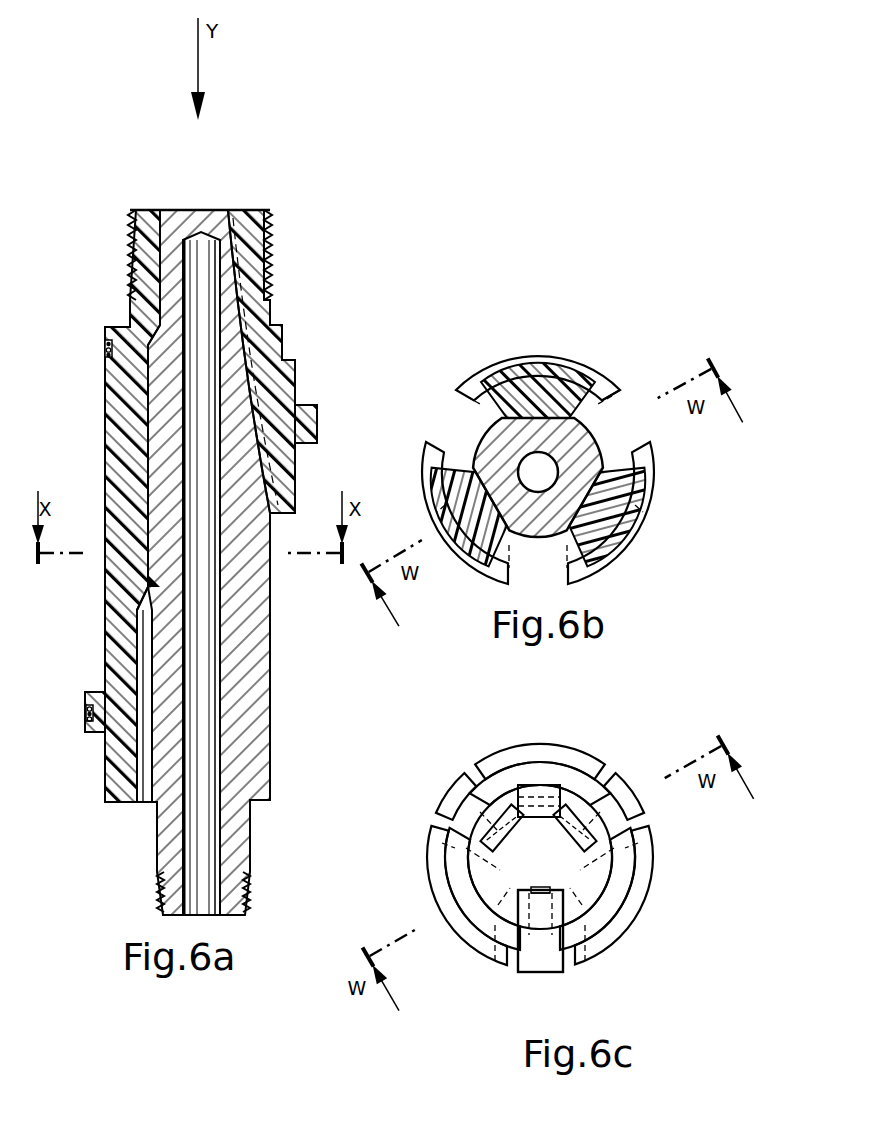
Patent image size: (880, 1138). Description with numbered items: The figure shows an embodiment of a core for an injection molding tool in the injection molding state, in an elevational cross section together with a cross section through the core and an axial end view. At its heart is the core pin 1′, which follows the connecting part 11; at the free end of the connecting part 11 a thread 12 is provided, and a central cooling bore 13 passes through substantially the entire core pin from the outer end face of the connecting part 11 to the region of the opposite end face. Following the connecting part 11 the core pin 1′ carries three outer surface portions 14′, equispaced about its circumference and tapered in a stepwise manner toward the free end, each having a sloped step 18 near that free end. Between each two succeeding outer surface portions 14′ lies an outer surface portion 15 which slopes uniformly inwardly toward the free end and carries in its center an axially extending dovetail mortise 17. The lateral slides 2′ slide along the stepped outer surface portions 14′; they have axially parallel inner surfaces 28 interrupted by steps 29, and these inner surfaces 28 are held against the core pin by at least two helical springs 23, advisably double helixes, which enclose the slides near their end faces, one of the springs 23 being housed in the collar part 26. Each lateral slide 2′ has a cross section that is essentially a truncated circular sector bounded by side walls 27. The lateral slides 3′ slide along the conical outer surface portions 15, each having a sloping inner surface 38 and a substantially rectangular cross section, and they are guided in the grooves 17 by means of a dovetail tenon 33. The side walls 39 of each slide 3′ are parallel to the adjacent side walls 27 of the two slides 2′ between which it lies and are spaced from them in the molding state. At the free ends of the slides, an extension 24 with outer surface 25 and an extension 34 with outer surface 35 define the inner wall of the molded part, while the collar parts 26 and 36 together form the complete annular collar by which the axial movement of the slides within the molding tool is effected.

In FIG. 6A, the core pin 1′ is at (173, 852).
In FIG. 6B, the core pin 1′ is at (573, 435).
In FIG. 6C, the core pin 1′ is at (533, 869).
In FIG. 6A, the lateral slide 2′ is at (130, 253).
In FIG. 6B, the lateral slide 2′ is at (545, 390).
In FIG. 6C, the lateral slide 2′ is at (462, 882).
In FIG. 6A, the lateral slide 3′ is at (260, 257).
In FIG. 6C, the lateral slide 3′ is at (547, 942).
In FIG. 6A, the connecting part 11 is at (237, 828).
In FIG. 6A, the thread 12 is at (246, 889).
In FIG. 6A, the central cooling bore 13 is at (212, 768).
In FIG. 6A, the outer surface portion 14′ is at (147, 422).
In FIG. 6A, the outer surface portion 15 is at (273, 377).
In FIG. 6A, the dovetail mortise 17 is at (285, 513).
In FIG. 6A, the sloped step 18 is at (108, 342).
In FIG. 6A, the helical spring 23 is at (105, 355).
In FIG. 6A, the extension 24 is at (150, 288).
In FIG. 6A, the outer surface 25 is at (132, 222).
In FIG. 6C, the outer surface 25 is at (539, 788).
In FIG. 6A, the part of annular collar 26 is at (85, 695).
In FIG. 6B, the part of annular collar 26 is at (638, 505).
In FIG. 6C, the part of annular collar 26 is at (455, 913).
In FIG. 6B, the side wall 27 is at (627, 443).
In FIG. 6C, the side wall 27 is at (503, 940).
In FIG. 6A, the axially parallel inner surface 28 is at (140, 580).
In FIG. 6A, the step 29 is at (132, 318).
In FIG. 6C, the dovetail tenon 33 is at (575, 836).
In FIG. 6A, the extension 34 is at (253, 291).
In FIG. 6A, the outer surface 35 is at (270, 223).
In FIG. 6C, the outer surface 35 is at (590, 812).
In FIG. 6A, the part of annular collar 36 is at (307, 430).
In FIG. 6C, the part of annular collar 36 is at (627, 792).
In FIG. 6A, the sloping inner surface 38 is at (273, 342).
In FIG. 6C, the side wall 39 is at (520, 933).